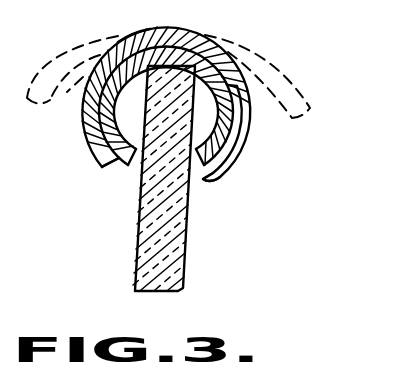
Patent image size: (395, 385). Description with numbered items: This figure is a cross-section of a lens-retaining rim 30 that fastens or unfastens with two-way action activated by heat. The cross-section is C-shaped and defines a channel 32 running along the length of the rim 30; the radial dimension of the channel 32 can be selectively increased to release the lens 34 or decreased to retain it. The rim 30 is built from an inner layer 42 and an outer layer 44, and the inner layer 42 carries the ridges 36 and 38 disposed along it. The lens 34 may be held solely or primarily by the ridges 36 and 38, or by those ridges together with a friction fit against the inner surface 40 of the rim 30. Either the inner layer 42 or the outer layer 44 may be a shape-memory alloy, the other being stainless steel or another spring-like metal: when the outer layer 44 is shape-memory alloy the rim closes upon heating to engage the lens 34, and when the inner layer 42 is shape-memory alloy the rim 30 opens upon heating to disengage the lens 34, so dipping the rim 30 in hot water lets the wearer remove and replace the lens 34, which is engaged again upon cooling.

The rim 30 is at (256, 108).
The channel 32 is at (240, 62).
The lens 34 is at (183, 255).
The ridge 36 is at (124, 168).
The ridge 38 is at (189, 168).
The inner surface 40 is at (196, 44).
The inner layer 42 is at (132, 50).
The outer layer 44 is at (100, 58).